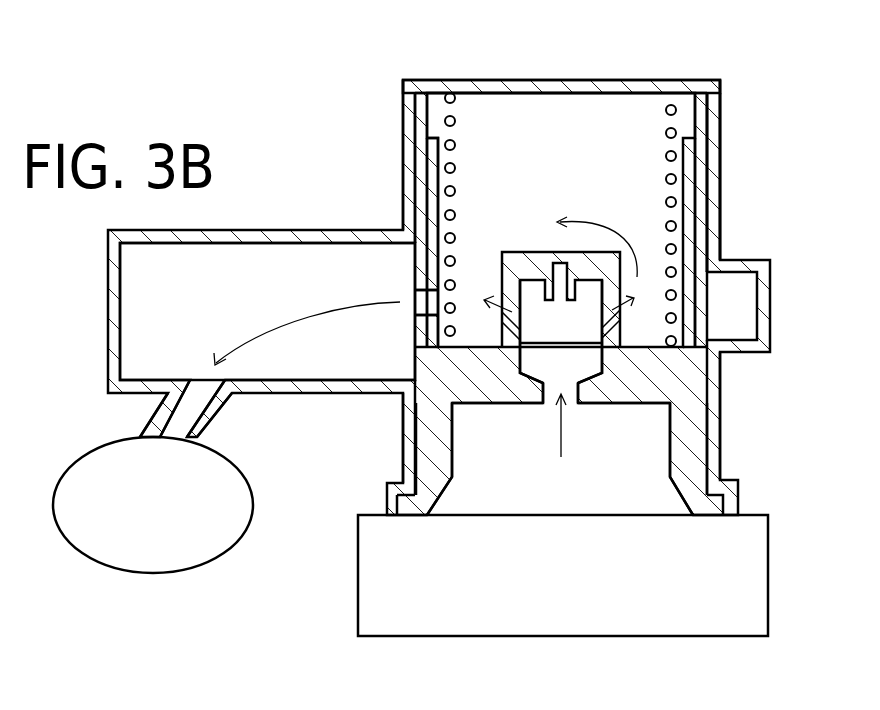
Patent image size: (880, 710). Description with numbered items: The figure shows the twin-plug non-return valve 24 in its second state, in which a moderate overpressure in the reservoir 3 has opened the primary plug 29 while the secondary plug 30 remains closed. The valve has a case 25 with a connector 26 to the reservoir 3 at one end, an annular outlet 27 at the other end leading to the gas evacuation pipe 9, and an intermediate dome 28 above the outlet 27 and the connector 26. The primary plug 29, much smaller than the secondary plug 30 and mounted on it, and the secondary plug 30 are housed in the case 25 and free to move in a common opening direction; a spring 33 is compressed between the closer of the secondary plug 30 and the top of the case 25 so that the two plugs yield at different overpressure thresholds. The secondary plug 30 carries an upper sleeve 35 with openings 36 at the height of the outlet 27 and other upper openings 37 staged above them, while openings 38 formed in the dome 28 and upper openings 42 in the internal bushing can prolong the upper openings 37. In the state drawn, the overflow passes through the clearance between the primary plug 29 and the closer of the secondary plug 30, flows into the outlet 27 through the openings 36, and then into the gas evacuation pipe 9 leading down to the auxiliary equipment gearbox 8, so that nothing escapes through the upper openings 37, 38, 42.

The reservoir 3 is at (563, 575).
The auxiliary equipment gearbox 8 is at (108, 442).
The gas evacuation pipe 9 is at (217, 411).
The non-return valve 24 is at (320, 160).
The case 25 is at (738, 207).
The connector 26 is at (453, 480).
The annular outlet 27 is at (267, 311).
The intermediate dome 28 is at (465, 79).
The primary plug 29 is at (548, 376).
The secondary plug 30 is at (626, 416).
The spring 33 is at (666, 178).
The upper sleeve 35 is at (433, 157).
The openings 36 is at (438, 298).
The upper openings 37 is at (440, 195).
The openings 38 is at (715, 155).
The upper openings 42 is at (700, 142).